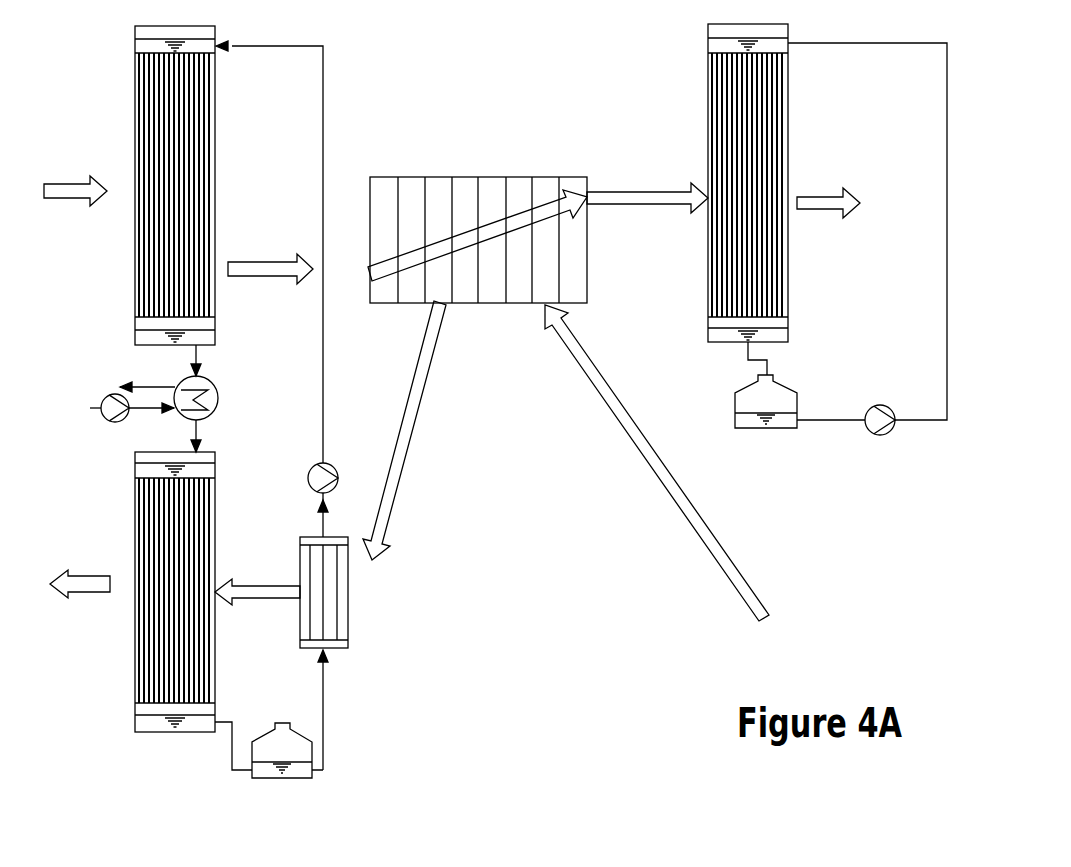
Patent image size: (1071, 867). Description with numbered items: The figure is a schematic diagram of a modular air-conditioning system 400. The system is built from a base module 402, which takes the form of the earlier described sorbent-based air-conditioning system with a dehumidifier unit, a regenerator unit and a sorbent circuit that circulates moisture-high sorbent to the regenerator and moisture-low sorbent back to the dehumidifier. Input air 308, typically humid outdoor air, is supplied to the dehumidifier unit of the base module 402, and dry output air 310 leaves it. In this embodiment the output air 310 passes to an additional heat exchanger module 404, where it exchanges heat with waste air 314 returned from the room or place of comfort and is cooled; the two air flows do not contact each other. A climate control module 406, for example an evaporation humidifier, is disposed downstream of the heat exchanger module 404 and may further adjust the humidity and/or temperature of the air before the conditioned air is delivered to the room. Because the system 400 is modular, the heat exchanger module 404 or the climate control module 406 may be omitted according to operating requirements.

The input air 308 is at (65, 188).
The output air 310 is at (262, 266).
The waste air 314 is at (750, 598).
The air-conditioning system 400 is at (561, 95).
The base module 402 is at (108, 436).
The heat exchanger module 404 is at (439, 187).
The climate control module 406 is at (778, 112).